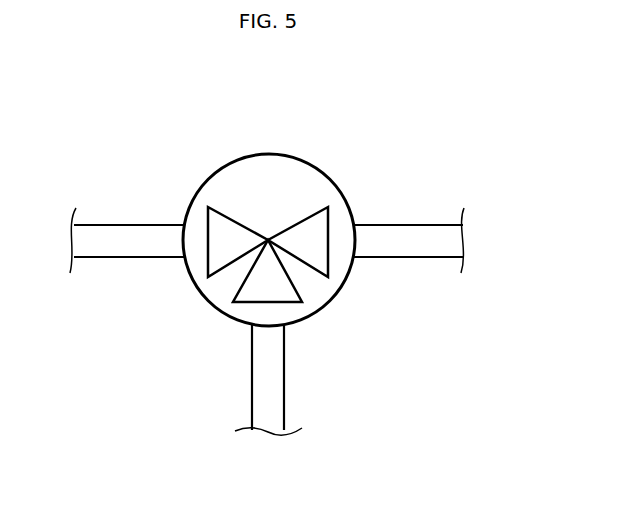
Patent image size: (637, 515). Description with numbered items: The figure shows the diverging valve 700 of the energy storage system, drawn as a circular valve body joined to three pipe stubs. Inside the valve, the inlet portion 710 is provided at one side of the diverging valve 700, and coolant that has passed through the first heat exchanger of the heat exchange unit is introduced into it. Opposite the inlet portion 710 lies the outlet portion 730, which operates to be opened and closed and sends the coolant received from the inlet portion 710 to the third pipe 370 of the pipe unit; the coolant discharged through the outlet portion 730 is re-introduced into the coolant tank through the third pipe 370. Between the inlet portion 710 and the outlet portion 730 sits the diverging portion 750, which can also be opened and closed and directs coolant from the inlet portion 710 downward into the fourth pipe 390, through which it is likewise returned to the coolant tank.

The diverging valve 700 is at (169, 128).
The inlet portion 710 is at (307, 227).
The outlet portion 730 is at (228, 228).
The diverging portion 750 is at (285, 283).
The third pipe 370 is at (138, 225).
The fourth pipe 390 is at (284, 380).